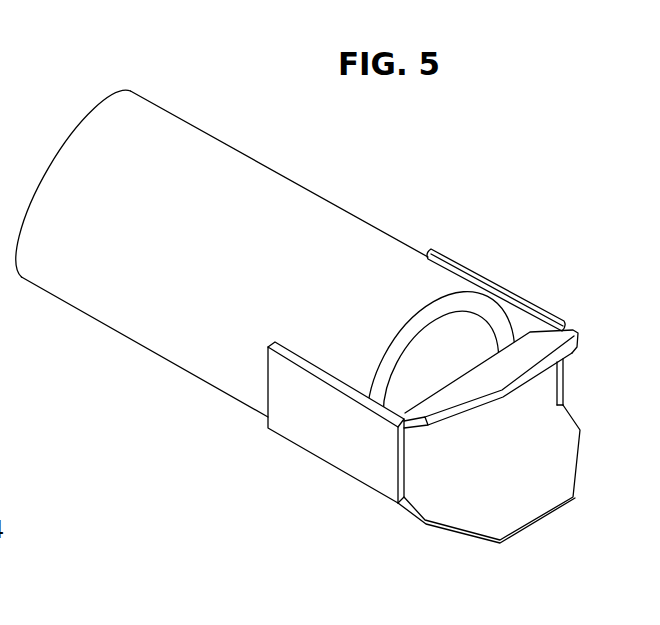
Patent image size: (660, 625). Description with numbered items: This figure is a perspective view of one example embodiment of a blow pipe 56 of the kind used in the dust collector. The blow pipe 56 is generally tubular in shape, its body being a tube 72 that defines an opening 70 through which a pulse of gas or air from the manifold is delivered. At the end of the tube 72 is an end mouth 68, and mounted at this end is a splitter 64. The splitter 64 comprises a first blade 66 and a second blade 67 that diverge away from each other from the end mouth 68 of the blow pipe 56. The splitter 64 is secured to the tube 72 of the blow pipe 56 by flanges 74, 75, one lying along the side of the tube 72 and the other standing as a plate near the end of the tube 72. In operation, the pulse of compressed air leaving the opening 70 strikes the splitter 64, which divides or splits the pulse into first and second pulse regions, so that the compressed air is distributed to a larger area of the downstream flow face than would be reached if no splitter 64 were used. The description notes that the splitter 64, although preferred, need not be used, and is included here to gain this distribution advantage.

The blow pipe 56 is at (320, 153).
The splitter 64 is at (463, 512).
The first blade 66 is at (544, 345).
The second blade 67 is at (546, 418).
The end mouth 68 is at (469, 322).
The opening 70 is at (397, 379).
The tube 72 is at (143, 345).
The flange 74 is at (299, 427).
The flange 75 is at (436, 256).